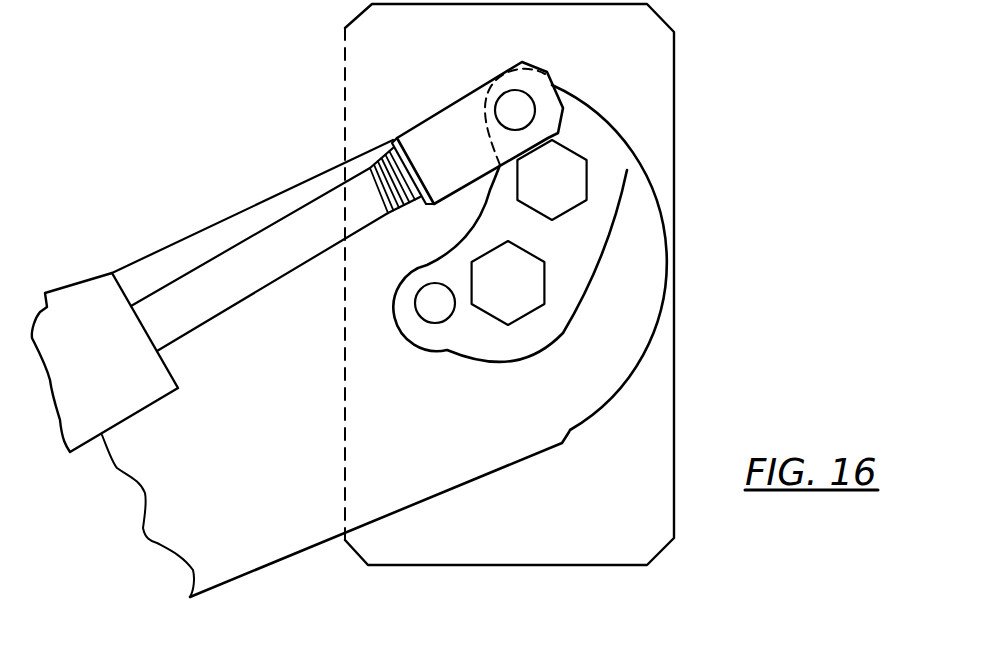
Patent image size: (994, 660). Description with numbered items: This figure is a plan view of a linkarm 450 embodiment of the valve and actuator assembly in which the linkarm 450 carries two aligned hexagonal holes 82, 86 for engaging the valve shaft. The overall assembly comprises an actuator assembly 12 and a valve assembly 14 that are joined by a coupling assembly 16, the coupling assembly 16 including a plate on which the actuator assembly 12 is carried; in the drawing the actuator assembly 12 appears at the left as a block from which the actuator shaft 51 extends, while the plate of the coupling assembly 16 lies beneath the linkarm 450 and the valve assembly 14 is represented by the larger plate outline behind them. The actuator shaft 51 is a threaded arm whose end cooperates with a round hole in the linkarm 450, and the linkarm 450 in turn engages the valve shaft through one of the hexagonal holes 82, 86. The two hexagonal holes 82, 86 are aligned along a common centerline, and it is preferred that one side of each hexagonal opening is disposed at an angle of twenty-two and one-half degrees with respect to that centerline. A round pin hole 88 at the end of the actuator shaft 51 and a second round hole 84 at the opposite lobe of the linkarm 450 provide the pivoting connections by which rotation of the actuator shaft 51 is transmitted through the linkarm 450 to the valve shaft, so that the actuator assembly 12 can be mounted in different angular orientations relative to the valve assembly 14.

The actuator assembly 12 is at (150, 413).
The valve assembly 14 is at (685, 146).
The coupling assembly 16 is at (438, 500).
The actuator shaft 51 is at (220, 313).
The hexagonal hole 82 is at (563, 148).
The pivot hole 84 is at (437, 322).
The hexagonal hole 86 is at (538, 287).
The pin hole 88 is at (512, 91).
The linkarm 450 is at (533, 372).